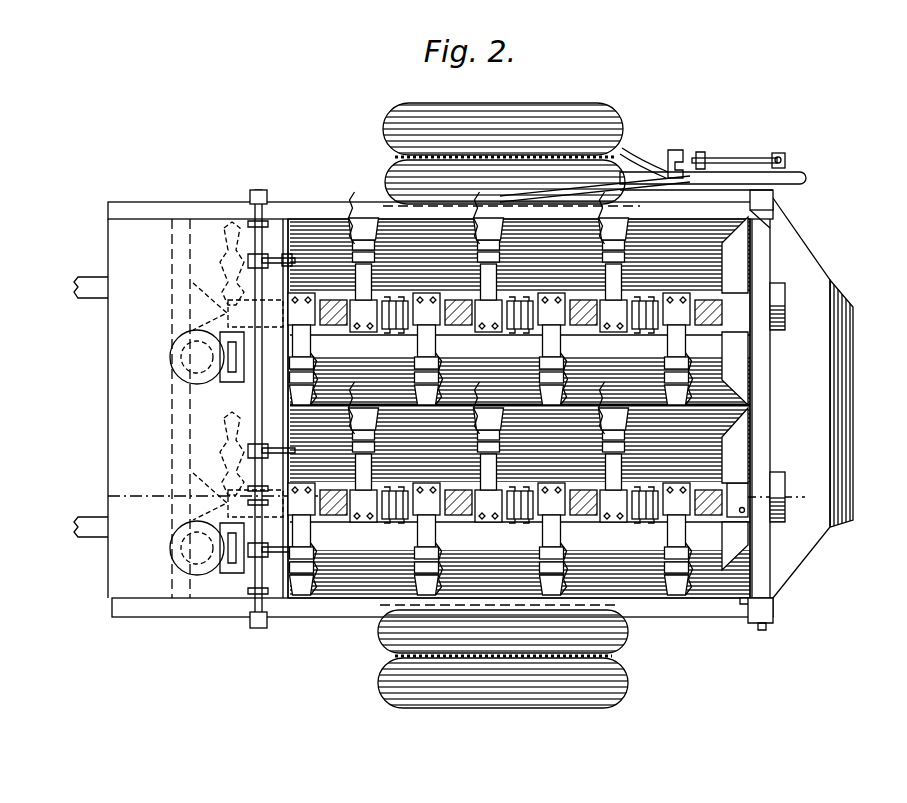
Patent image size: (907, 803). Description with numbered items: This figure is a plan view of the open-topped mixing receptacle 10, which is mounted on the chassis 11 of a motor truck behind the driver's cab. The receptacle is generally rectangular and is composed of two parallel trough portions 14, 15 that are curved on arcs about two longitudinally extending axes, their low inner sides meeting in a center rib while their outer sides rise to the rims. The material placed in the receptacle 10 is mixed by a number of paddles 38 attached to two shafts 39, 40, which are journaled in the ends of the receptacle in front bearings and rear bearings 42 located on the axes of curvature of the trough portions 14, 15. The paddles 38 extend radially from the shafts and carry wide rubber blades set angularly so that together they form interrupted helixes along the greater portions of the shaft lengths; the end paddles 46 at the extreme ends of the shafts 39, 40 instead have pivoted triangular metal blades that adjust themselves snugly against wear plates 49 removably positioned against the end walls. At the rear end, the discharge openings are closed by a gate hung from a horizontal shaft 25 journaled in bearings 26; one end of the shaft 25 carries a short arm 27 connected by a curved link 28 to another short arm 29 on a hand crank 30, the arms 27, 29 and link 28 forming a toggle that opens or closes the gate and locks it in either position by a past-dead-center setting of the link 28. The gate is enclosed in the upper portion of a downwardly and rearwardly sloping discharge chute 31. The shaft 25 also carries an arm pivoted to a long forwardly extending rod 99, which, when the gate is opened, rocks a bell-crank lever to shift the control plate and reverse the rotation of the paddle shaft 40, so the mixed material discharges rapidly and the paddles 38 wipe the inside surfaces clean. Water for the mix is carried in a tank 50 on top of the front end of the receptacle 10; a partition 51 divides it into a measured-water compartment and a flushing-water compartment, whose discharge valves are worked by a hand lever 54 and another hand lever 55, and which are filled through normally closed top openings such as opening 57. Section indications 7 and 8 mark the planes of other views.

The section line 7 is at (453, 185).
The section line 8 is at (737, 133).
The mixing receptacle 10 is at (300, 608).
The chassis 11 is at (90, 293).
The trough portion 14 is at (352, 585).
The trough portion 15 is at (323, 222).
The shaft 25 is at (767, 625).
The bearings 26 is at (768, 197).
The short arm 27 is at (787, 162).
The curved link 28 is at (719, 160).
The short arm 29 is at (668, 172).
The hand crank 30 is at (622, 118).
The discharge chute 31 is at (837, 393).
The paddles 38 is at (608, 234).
The shaft 39 is at (505, 515).
The paddle shaft 40 is at (505, 322).
The rear bearings 42 is at (784, 293).
The end paddles 46 is at (730, 280).
The wear plates 49 is at (750, 412).
The tank 50 is at (142, 232).
The partition 51 is at (158, 493).
The hand lever 54 is at (252, 195).
The hand lever 55 is at (258, 619).
The opening 57 is at (170, 545).
The rod 99 is at (557, 191).